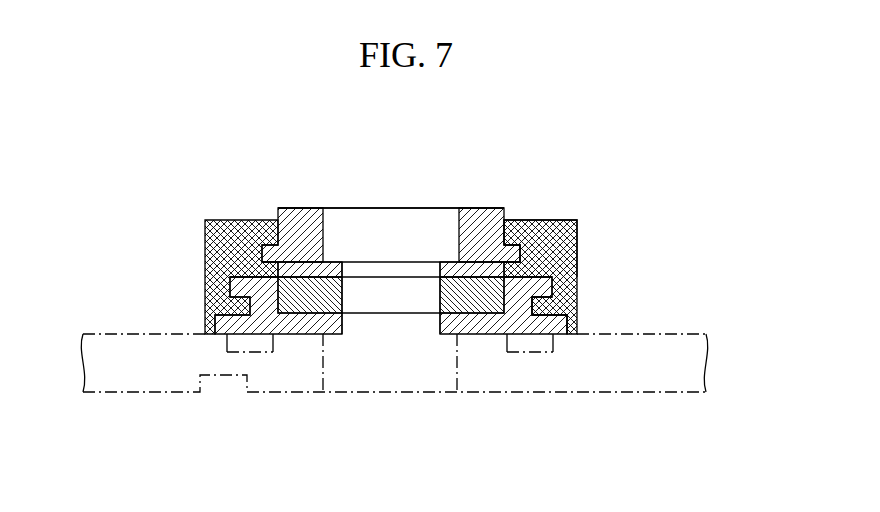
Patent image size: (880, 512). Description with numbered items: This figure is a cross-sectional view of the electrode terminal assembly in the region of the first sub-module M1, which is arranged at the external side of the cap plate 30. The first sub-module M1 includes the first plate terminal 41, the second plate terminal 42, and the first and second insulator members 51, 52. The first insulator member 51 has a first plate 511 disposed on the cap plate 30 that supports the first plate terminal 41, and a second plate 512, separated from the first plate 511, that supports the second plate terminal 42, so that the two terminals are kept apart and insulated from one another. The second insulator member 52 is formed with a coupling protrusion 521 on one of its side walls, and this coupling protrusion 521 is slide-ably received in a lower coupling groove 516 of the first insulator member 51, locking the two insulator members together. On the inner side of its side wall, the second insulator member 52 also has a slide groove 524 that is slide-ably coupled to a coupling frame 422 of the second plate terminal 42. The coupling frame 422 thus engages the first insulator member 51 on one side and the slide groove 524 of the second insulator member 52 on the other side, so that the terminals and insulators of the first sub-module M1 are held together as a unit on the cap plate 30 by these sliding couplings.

The cap plate 30 is at (602, 378).
The first plate terminal 41 is at (442, 272).
The second plate terminal 42 is at (476, 222).
The coupling frame 422 is at (514, 252).
The first insulator member 51 is at (292, 344).
The first plate 511 is at (448, 322).
The second plate 512 is at (298, 268).
The lower coupling groove 516 is at (547, 318).
The second insulator member 52 is at (205, 268).
The coupling protrusion 521 is at (542, 305).
The slide groove 524 is at (545, 263).
The first sub-module M1 is at (597, 200).